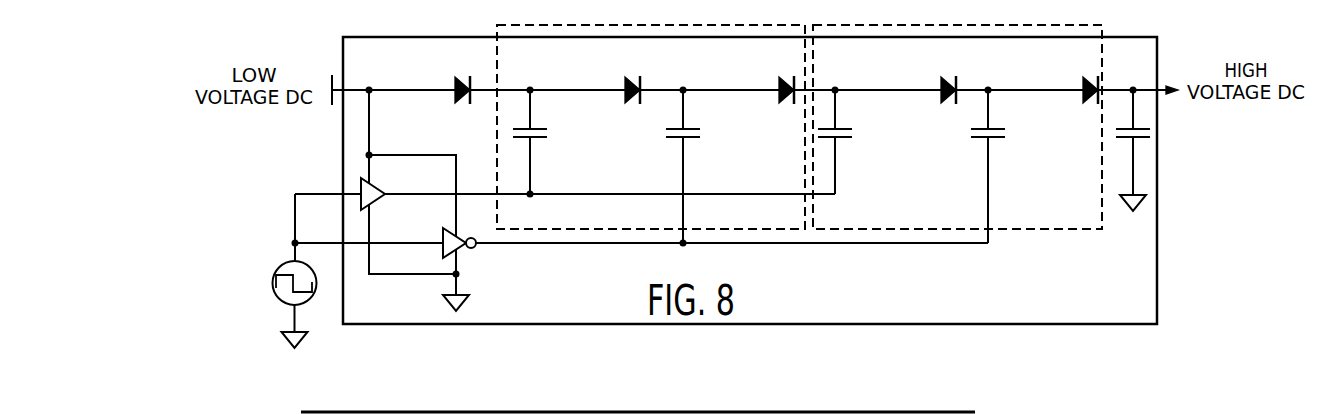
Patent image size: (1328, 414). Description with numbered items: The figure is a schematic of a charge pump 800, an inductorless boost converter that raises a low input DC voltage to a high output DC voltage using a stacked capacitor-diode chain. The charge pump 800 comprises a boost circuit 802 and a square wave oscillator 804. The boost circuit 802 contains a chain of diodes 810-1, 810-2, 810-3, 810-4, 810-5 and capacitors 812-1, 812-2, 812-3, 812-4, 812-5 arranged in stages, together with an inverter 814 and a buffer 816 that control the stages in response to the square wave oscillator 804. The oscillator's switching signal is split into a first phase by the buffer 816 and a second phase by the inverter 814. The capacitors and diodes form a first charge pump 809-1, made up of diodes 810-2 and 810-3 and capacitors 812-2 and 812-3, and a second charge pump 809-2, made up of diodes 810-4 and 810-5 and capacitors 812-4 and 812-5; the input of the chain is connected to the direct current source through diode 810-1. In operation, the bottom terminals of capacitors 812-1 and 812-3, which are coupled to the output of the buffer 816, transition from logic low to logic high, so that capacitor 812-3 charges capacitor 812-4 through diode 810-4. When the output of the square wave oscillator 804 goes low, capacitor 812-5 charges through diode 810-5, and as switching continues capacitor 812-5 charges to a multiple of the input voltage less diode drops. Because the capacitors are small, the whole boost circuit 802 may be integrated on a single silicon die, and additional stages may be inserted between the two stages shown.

The charge pump 800 is at (163, 128).
The boost circuit 802 is at (1132, 312).
The square wave oscillator 804 is at (316, 288).
The charge pump 809-1 is at (775, 223).
The charge pump 809-2 is at (1090, 223).
The diode 810-1 is at (455, 83).
The diode 810-2 is at (625, 85).
The diode 810-3 is at (778, 84).
The diode 810-4 is at (940, 85).
The diode 810-5 is at (1084, 86).
The capacitor 812-1 is at (548, 134).
The capacitor 812-2 is at (701, 134).
The capacitor 812-3 is at (853, 134).
The capacitor 812-4 is at (1006, 136).
The capacitor 812-5 is at (1151, 135).
The inverter 814 is at (460, 250).
The buffer 816 is at (375, 202).